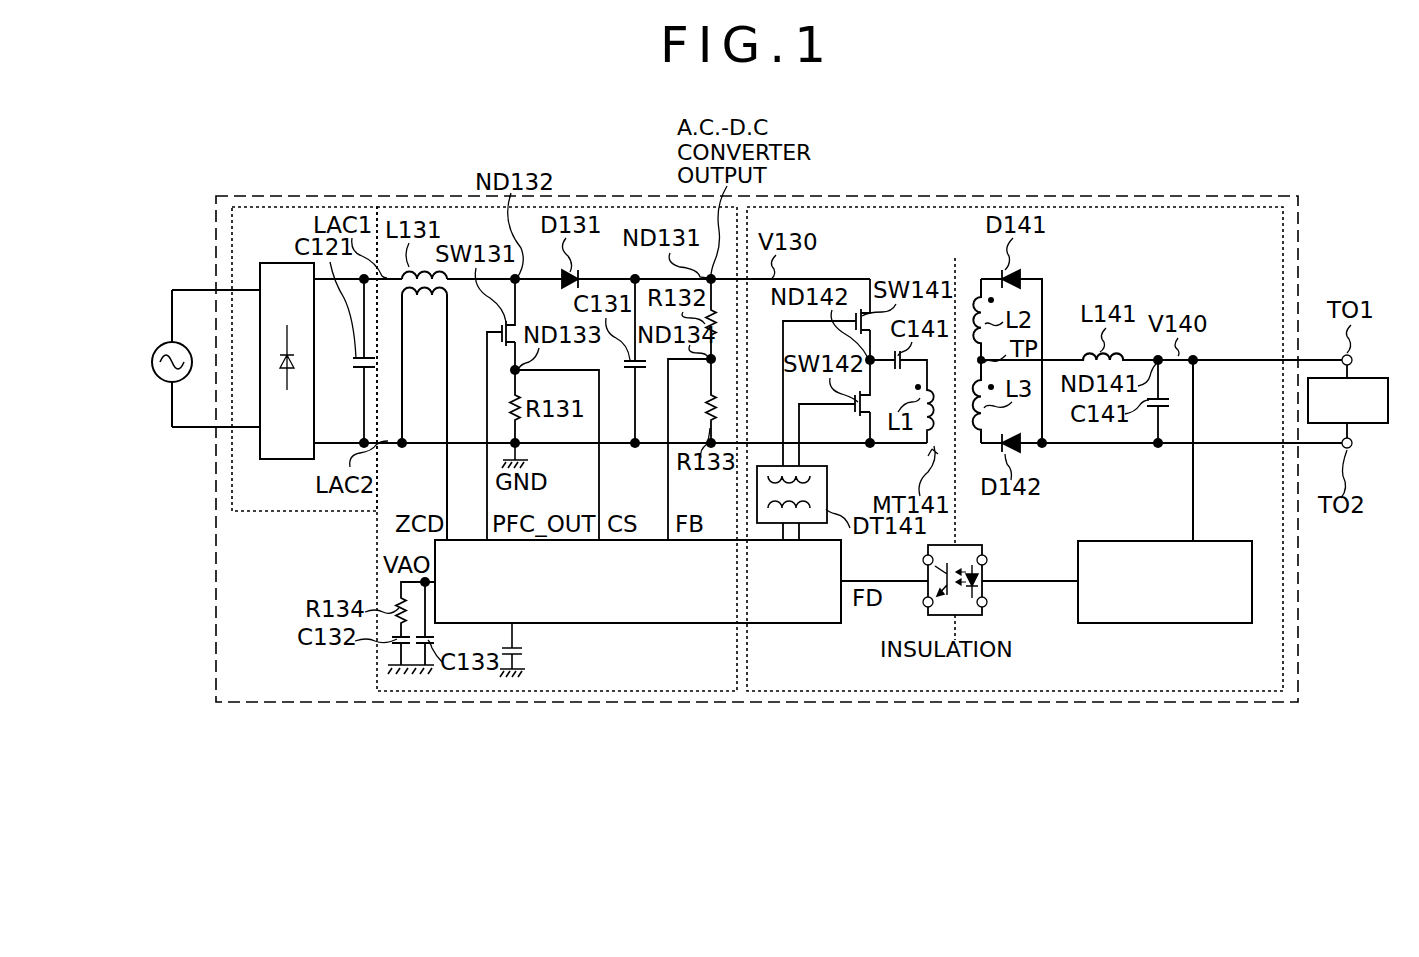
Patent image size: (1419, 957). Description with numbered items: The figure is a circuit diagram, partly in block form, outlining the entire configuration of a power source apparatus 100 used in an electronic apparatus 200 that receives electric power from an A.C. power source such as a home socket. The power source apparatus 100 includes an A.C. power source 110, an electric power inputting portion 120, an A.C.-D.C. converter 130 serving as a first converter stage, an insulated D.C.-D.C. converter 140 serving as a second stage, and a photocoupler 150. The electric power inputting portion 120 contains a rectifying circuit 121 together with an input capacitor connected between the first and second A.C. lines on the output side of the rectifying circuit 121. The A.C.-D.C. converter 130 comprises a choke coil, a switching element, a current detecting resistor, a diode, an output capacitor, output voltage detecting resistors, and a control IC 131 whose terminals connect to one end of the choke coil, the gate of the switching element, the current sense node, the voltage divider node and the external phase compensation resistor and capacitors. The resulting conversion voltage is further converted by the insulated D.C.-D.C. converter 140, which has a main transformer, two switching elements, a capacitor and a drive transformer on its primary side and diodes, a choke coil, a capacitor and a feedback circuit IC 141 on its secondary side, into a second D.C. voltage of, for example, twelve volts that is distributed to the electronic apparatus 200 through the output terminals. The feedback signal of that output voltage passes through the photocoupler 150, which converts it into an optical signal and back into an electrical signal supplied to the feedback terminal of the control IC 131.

The power source apparatus 100 is at (315, 702).
The A.C. power source 110 is at (156, 374).
The electric power inputting portion 120 is at (232, 248).
The rectifying circuit 121 is at (285, 461).
The A.C.-D.C. converter 130 is at (585, 691).
The control IC 131 is at (633, 623).
The D.C.-D.C. converter 140 is at (1063, 197).
The feedback circuit (IC) 141 is at (1130, 541).
The photocoupler 150 is at (985, 613).
The electronic apparatus 200 is at (1372, 474).